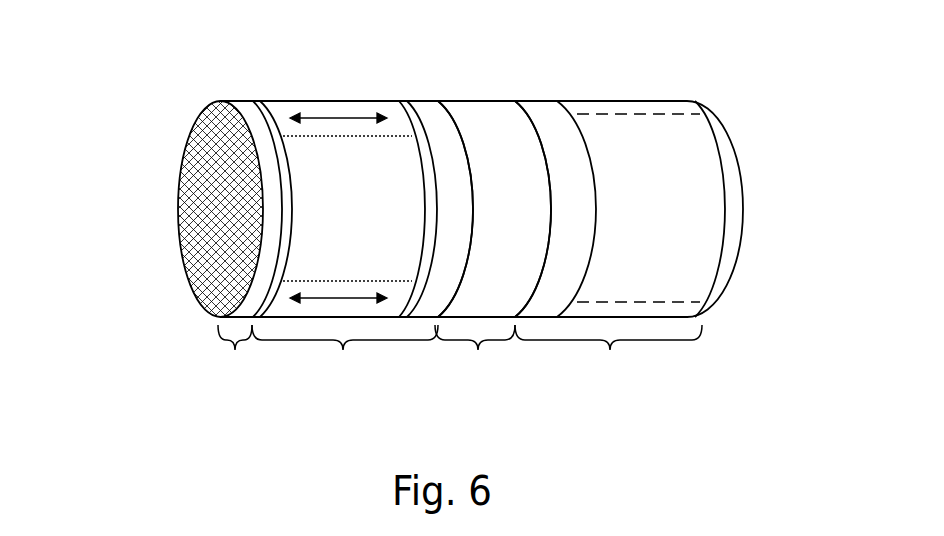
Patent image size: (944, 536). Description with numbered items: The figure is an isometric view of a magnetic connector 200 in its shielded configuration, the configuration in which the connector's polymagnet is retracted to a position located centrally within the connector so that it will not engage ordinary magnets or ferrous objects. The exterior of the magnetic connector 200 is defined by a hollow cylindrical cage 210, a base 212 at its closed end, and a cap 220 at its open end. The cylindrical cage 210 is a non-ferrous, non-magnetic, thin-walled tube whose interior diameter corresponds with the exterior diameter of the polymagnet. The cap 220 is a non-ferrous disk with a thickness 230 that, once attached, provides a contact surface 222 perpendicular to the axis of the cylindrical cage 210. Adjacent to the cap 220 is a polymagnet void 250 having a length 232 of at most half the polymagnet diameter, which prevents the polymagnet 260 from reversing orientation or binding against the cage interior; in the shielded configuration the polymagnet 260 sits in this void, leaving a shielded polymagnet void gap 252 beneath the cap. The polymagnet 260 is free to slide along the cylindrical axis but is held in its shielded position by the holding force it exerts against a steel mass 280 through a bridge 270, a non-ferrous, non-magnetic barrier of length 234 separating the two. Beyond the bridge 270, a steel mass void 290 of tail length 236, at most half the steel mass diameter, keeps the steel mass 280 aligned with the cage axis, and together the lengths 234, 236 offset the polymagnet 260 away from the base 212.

The magnetic connector 200 is at (135, 158).
The cylindrical cage 210 is at (283, 101).
The base 212 is at (723, 208).
The cap 220 is at (204, 232).
The contact surface 222 is at (203, 198).
The thickness 230 is at (234, 358).
The length 232 is at (345, 358).
The length 234 is at (475, 358).
The length 236 is at (608, 358).
The polymagnet void 250 is at (347, 208).
The shielded polymagnet void gap 252 is at (369, 115).
The polymagnet 260 is at (425, 108).
The bridge 270 is at (483, 108).
The steel mass 280 is at (543, 108).
The steel mass void 290 is at (636, 127).